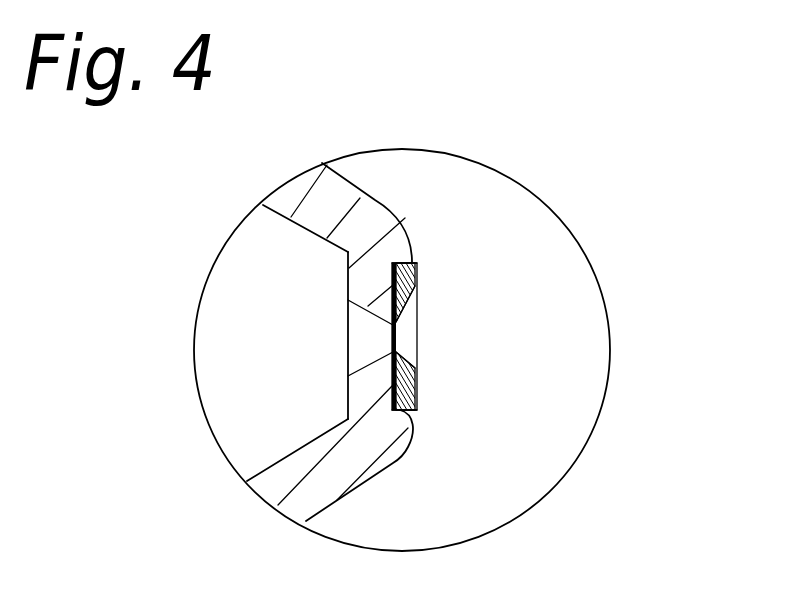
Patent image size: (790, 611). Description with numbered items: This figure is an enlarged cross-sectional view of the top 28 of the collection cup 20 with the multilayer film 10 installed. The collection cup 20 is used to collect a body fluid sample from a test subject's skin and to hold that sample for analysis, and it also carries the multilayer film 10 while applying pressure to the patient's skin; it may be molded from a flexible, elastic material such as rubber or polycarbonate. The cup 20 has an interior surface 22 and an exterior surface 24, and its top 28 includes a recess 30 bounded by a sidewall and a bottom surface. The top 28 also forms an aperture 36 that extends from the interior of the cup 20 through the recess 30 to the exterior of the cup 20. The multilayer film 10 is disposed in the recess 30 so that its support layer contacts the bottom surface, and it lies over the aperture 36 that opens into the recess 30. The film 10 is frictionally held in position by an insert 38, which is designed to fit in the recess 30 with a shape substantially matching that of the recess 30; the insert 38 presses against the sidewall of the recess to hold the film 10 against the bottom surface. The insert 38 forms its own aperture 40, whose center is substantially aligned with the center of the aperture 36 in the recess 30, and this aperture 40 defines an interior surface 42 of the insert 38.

The multilayer film 10 is at (392, 338).
The collection cup 20 is at (300, 192).
The interior surface 22 is at (298, 453).
The exterior surface 24 is at (360, 198).
The top or apex 28 is at (410, 237).
The recess 30 is at (430, 253).
The aperture 36 is at (326, 356).
The insert 38 is at (417, 283).
The aperture 40 is at (428, 341).
The interior surface 42 is at (416, 311).